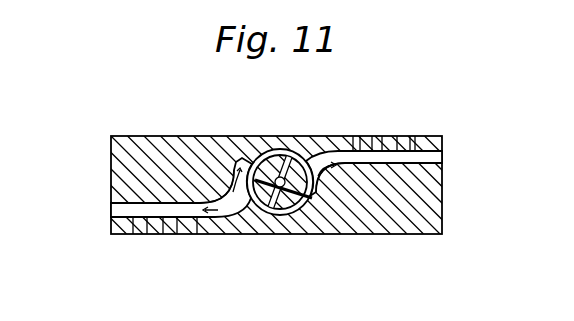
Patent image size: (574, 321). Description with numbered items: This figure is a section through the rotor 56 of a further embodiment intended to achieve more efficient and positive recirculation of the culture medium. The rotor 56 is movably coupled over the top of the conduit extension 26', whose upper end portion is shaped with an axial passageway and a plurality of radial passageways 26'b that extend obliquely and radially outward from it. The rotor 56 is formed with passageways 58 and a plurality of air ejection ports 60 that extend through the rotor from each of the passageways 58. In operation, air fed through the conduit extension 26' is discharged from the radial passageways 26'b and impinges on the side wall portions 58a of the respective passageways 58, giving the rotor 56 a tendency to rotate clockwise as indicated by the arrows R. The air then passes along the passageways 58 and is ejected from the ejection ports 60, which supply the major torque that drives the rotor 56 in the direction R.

The rotor 56 is at (433, 234).
The passageways 58 is at (157, 210).
The side wall portions 58a is at (229, 158).
The conduit extension 26' is at (280, 157).
The radial passageways 26'b is at (300, 192).
The air ejection ports 60 is at (355, 135).
The direction of rotation R is at (177, 101).